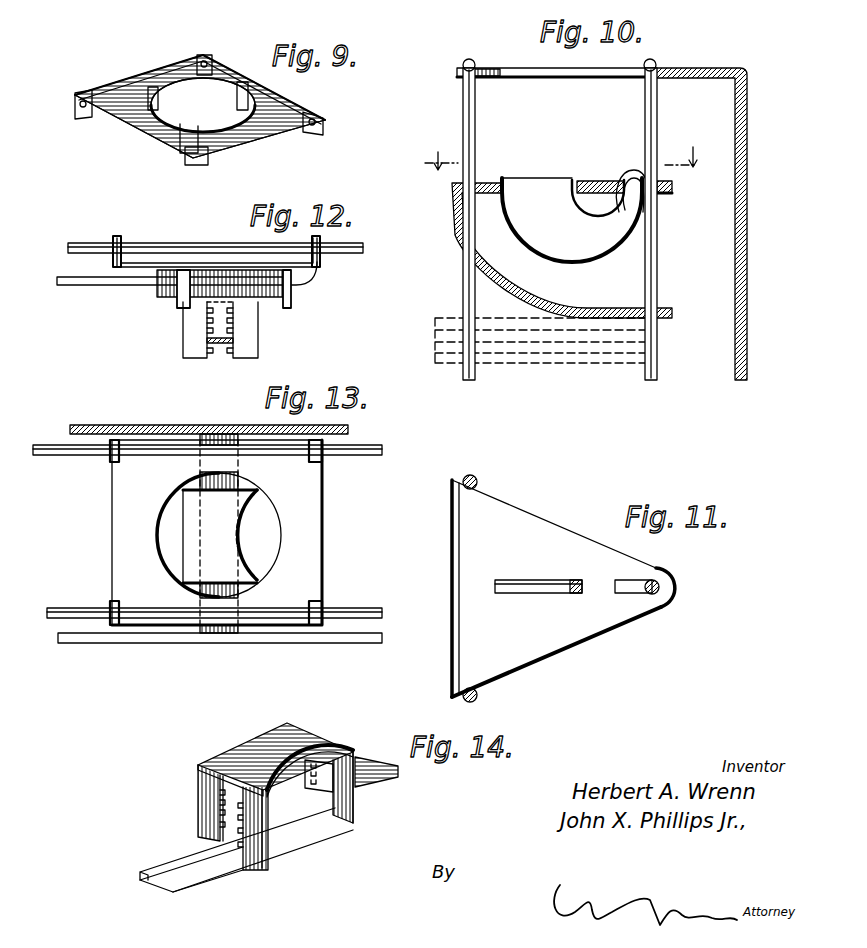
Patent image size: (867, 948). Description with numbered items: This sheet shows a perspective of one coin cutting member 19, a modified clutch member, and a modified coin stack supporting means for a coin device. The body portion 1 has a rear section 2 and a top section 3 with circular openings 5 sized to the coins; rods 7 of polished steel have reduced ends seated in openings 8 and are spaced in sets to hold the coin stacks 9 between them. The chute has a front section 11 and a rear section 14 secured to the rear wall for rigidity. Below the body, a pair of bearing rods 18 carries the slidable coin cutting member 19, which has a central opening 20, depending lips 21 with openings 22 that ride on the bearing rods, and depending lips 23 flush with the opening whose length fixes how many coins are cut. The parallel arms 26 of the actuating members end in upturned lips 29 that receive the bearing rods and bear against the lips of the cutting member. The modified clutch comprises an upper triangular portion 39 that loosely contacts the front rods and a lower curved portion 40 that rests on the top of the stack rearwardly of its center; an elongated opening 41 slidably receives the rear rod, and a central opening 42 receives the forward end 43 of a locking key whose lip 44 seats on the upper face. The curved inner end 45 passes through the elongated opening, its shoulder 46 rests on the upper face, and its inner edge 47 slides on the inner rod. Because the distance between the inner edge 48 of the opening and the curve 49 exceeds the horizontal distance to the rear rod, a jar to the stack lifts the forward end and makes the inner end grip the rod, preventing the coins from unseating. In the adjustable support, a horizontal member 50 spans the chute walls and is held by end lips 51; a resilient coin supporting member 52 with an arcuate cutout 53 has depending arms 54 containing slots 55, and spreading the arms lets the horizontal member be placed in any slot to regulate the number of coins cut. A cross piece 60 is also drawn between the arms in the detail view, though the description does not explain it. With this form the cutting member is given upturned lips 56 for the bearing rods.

In FIG. 10, the body portion 1 is at (755, 205).
In FIG. 10, the rear section 2 is at (748, 272).
In FIG. 10, the top section 3 is at (688, 68).
In FIG. 10, the openings 5 is at (574, 68).
In FIG. 10, the rods 7 is at (463, 113).
In FIG. 11, the rods 7 is at (477, 479).
In FIG. 10, the openings 8 is at (648, 68).
In FIG. 12, the coin stacks 9 is at (268, 292).
In FIG. 10, the coin stacks 9 is at (435, 318).
In FIG. 13, the front section 11 is at (75, 644).
In FIG. 10, the front section 11 is at (562, 160).
In FIG. 13, the rear section 14 is at (156, 418).
In FIG. 12, the bearing rods 18 is at (172, 250).
In FIG. 13, the bearing rods 18 is at (372, 448).
In FIG. 9, the coin cutting member 19 is at (130, 84).
In FIG. 12, the coin cutting member 19 is at (212, 262).
In FIG. 13, the coin cutting member 19 is at (310, 550).
In FIG. 9, the openings 20 is at (222, 126).
In FIG. 13, the openings 20 is at (166, 551).
In FIG. 9, the depending lips 21 is at (216, 68).
In FIG. 9, the openings 22 is at (206, 60).
In FIG. 9, the depending lips 23 is at (252, 96).
In FIG. 12, the depending lips 23 is at (178, 308).
In FIG. 12, the parallel arms 26 is at (90, 290).
In FIG. 13, the upturned lips 29 is at (308, 450).
In FIG. 10, the upper triangular portion 39 is at (591, 180).
In FIG. 11, the upper triangular portion 39 is at (545, 526).
In FIG. 10, the lower curved portion 40 is at (600, 310).
In FIG. 10, the elongated opening 41 is at (668, 194).
In FIG. 10, the opening 42 is at (572, 178).
In FIG. 11, the opening 42 is at (518, 580).
In FIG. 10, the forward end of locking key 43 is at (535, 184).
In FIG. 11, the forward end of locking key 43 is at (536, 594).
In FIG. 10, the lip 44 is at (498, 182).
In FIG. 10, the inner end of locking key 45 is at (620, 198).
In FIG. 11, the inner end of locking key 45 is at (641, 580).
In FIG. 10, the shoulder 46 is at (623, 186).
In FIG. 10, the inner edge 47 is at (660, 184).
In FIG. 10, the inner edge of opening 48 is at (636, 172).
In FIG. 10, the curve 49 is at (642, 166).
In FIG. 13, the horizontal member 50 is at (252, 590).
In FIG. 14, the horizontal member 50 is at (168, 858).
In FIG. 14, the lips 51 is at (378, 757).
In FIG. 13, the coin supporting member 52 is at (196, 514).
In FIG. 14, the coin supporting member 52 is at (256, 745).
In FIG. 13, the arcuate cutout portion 53 is at (263, 536).
In FIG. 14, the arcuate cutout portion 53 is at (322, 750).
In FIG. 12, the depending arms 54 is at (185, 355).
In FIG. 13, the depending arms 54 is at (183, 500).
In FIG. 14, the depending arms 54 is at (198, 802).
In FIG. 12, the slots 55 is at (200, 332).
In FIG. 14, the slots 55 is at (218, 790).
In FIG. 12, the upturned lips 56 is at (118, 238).
In FIG. 13, the upturned lips 56 is at (110, 452).
In FIG. 12, the cross piece 60 is at (221, 344).